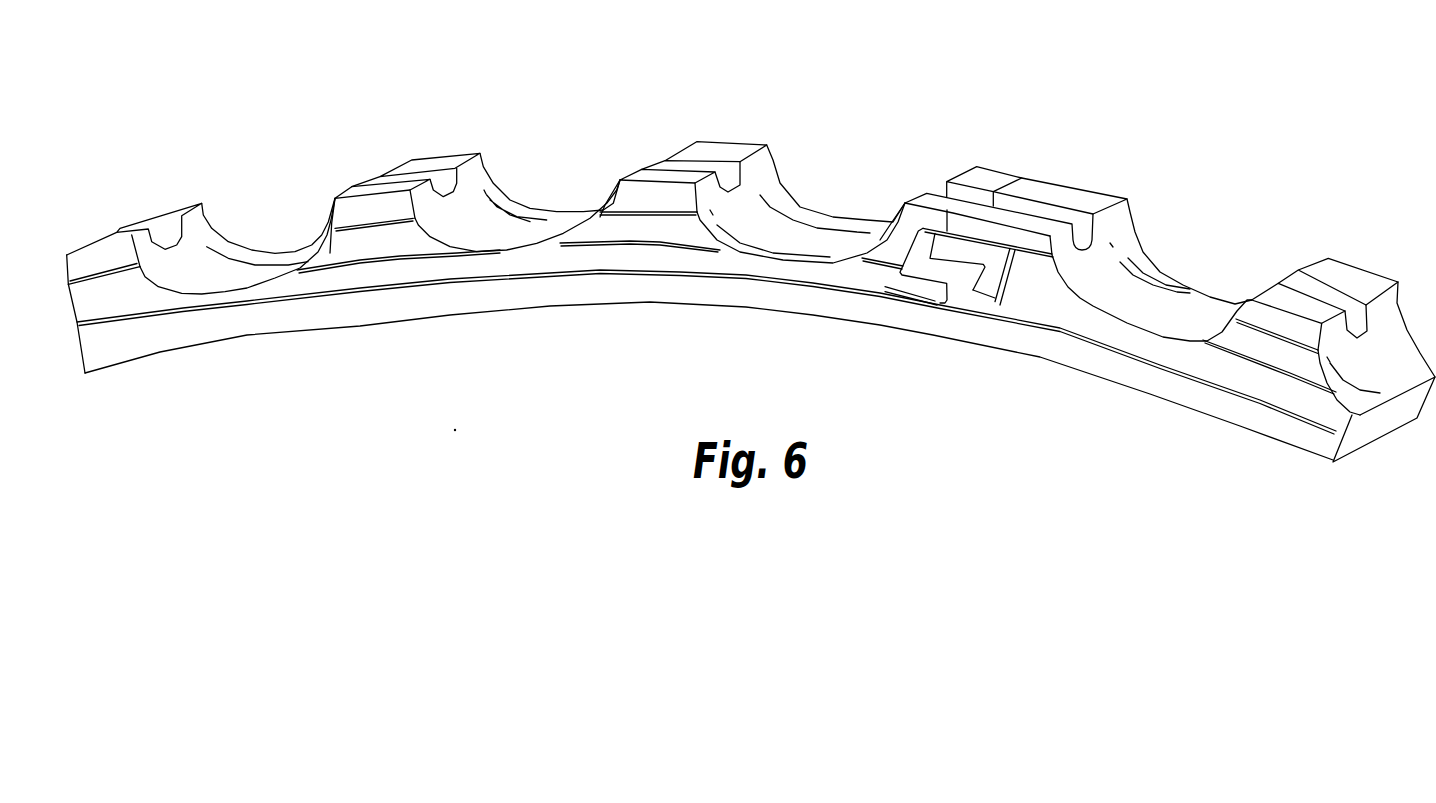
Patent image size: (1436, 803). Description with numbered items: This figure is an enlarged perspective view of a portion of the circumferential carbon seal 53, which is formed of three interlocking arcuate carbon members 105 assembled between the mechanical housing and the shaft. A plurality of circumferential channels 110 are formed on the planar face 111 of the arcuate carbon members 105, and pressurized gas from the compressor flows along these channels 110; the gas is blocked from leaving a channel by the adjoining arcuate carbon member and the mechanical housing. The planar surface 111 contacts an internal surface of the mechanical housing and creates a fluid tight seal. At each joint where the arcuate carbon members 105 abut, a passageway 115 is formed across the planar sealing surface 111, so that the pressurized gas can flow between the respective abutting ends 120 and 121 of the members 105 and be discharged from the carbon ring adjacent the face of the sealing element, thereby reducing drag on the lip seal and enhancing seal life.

The circumferential carbon seal 53 is at (659, 134).
The arcuate carbon member 105 is at (692, 290).
The circumferential channel 110 is at (377, 272).
The planar face 111 is at (1305, 360).
The passageway 115 is at (985, 293).
The abutting end 120 is at (967, 205).
The abutting end 121 is at (1015, 191).